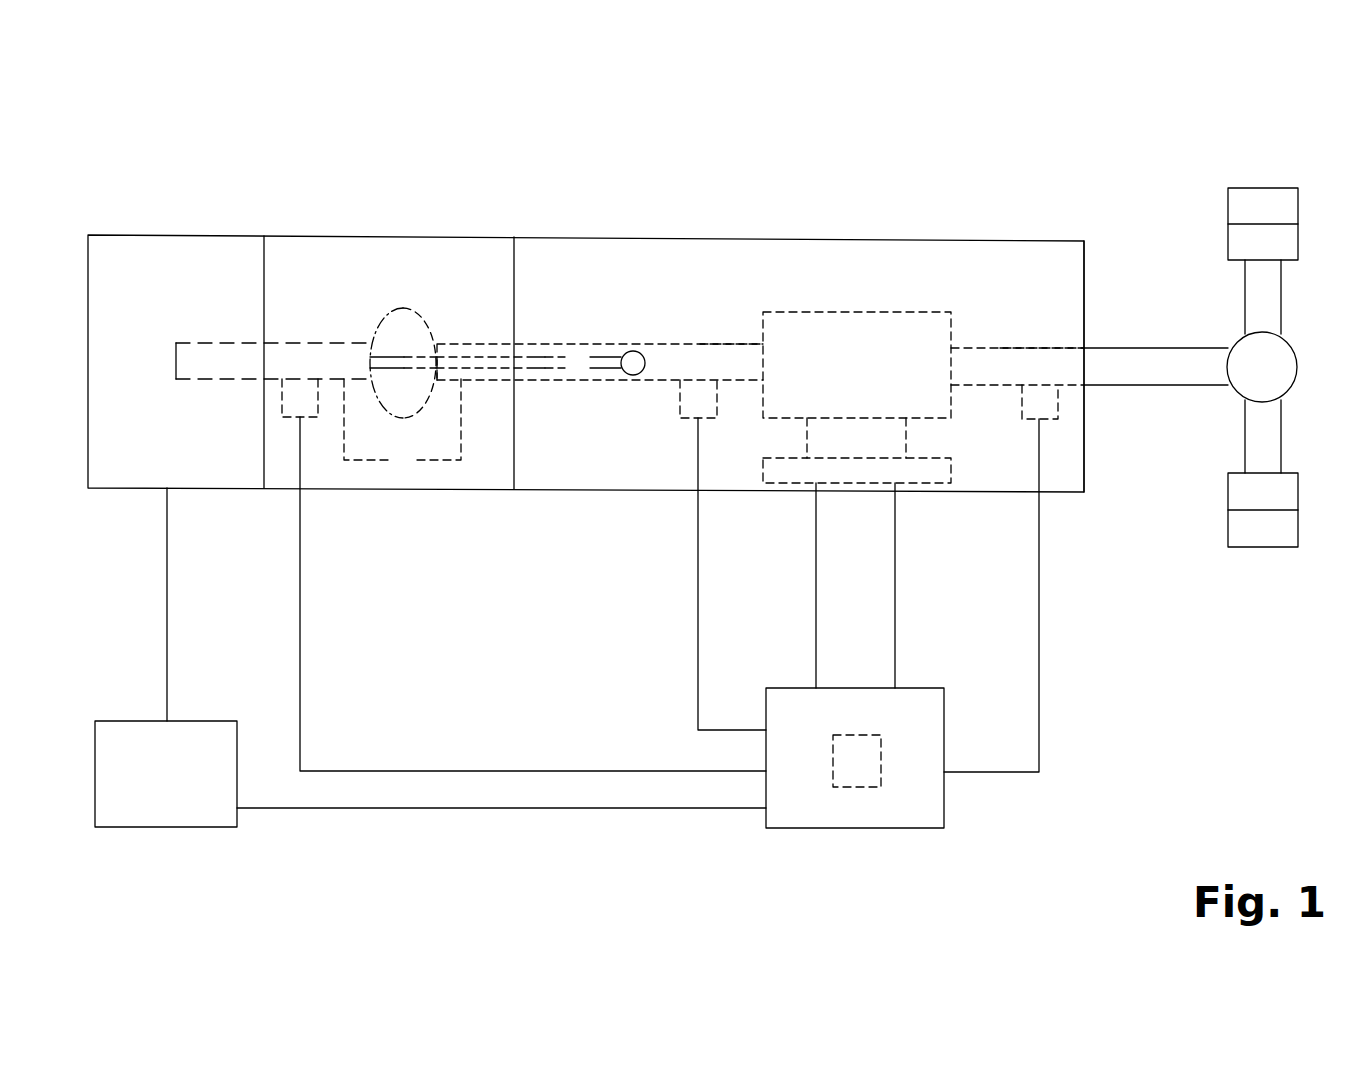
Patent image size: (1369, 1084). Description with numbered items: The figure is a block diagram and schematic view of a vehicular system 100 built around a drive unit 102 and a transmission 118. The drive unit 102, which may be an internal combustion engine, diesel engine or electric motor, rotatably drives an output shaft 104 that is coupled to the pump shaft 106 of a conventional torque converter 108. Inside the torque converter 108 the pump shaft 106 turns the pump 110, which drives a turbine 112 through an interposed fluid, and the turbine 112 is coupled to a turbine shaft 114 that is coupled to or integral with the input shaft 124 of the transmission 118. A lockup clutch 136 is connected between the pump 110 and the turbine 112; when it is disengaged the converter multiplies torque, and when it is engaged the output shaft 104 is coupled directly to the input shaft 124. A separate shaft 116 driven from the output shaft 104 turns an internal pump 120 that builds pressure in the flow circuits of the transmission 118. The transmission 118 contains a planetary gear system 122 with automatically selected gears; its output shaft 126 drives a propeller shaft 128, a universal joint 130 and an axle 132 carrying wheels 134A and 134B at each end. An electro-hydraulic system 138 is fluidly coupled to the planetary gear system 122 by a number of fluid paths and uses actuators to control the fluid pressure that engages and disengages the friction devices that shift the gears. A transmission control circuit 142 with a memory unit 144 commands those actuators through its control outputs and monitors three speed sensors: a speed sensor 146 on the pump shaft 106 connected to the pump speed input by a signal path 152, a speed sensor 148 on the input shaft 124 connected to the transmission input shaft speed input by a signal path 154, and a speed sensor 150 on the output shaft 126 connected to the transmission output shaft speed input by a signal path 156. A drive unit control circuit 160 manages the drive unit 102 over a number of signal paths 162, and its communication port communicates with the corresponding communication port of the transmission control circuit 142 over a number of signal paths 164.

The vehicular system 100 is at (128, 160).
The drive unit 102 is at (206, 235).
The output shaft 104 is at (219, 343).
The pump shaft 106 is at (310, 342).
The torque converter 108 is at (400, 236).
The pump 110 is at (348, 290).
The turbine 112 is at (430, 320).
The turbine shaft 114 is at (472, 344).
The shaft 116 is at (540, 383).
The transmission 118 is at (797, 240).
The internal pump 120 is at (633, 350).
The planetary gear system 122 is at (888, 380).
The input shaft 124 is at (712, 345).
The output shaft 126 is at (1015, 348).
The propeller shaft 128 is at (1156, 348).
The universal joint 130 is at (1292, 392).
The axle 132 is at (1283, 304).
The wheel 134A is at (1263, 188).
The wheel 134B is at (1263, 548).
The lockup clutch 136 is at (417, 465).
The electro-hydraulic system 138 is at (920, 470).
The transmission control circuit 142 is at (825, 830).
The memory unit 144 is at (863, 788).
The speed sensor 146 is at (280, 398).
The speed sensor 148 is at (687, 400).
The speed sensor 150 is at (1058, 400).
The signal path 152 is at (460, 771).
The signal path 154 is at (698, 620).
The signal path 156 is at (1039, 655).
The drive unit control circuit 160 is at (157, 828).
The signal paths 162 is at (167, 538).
The signal paths 164 is at (415, 810).